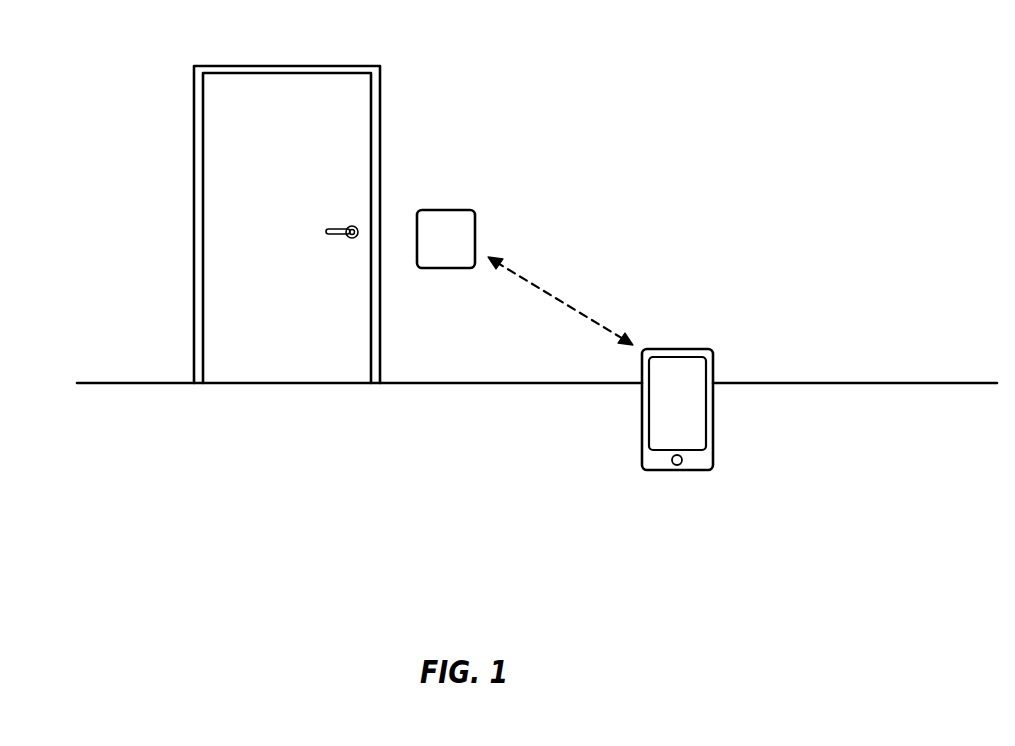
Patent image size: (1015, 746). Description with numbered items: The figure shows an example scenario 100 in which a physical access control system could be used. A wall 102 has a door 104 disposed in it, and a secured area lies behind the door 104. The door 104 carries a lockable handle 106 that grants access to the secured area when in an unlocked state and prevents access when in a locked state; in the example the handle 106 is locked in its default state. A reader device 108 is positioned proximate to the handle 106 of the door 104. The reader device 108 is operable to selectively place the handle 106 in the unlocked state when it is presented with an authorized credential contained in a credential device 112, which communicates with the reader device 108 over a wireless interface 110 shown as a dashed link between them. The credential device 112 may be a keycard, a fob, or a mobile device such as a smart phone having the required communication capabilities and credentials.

The scenario 100 is at (784, 59).
The wall 102 is at (527, 58).
The door 104 is at (287, 63).
The lockable handle 106 is at (343, 225).
The reader device 108 is at (475, 228).
The wireless interface 110 is at (557, 300).
The credential device 112 is at (713, 402).